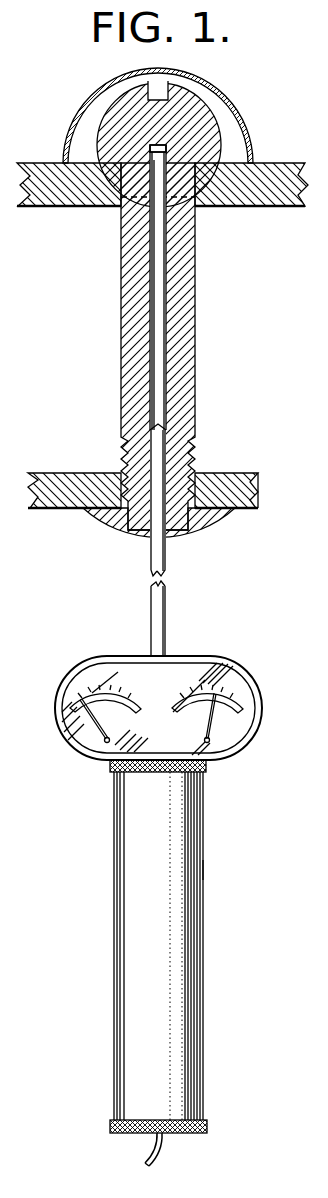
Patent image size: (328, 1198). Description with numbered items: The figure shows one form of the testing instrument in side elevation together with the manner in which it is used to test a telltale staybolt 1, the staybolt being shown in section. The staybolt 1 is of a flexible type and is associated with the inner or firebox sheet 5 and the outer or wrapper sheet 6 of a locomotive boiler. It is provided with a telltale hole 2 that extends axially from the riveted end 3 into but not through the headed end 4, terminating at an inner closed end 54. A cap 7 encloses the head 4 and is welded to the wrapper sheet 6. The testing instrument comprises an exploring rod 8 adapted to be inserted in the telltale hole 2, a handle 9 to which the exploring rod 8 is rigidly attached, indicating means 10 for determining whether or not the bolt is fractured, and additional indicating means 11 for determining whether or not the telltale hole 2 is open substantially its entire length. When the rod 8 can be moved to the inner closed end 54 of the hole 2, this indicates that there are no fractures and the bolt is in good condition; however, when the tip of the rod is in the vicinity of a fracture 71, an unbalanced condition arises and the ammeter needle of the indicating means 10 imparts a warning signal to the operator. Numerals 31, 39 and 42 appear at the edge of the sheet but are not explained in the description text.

The telltale staybolt 1 is at (122, 367).
The telltale hole 2 is at (153, 283).
The riveted end 3 is at (115, 525).
The headed end 4 is at (115, 125).
The inner or firebox sheet 5 is at (53, 483).
The outer or wrapper sheet 6 is at (68, 206).
The cap 7 is at (222, 100).
The exploring rod 8 is at (155, 608).
The handle 9 is at (125, 918).
The indicating means 10 is at (218, 728).
The additional indicating means 11 is at (93, 727).
The plate portion 31 is at (293, 491).
The gauge housing 39 is at (191, 708).
The cylinder portion 42 is at (265, 867).
The inner closed end 54 is at (168, 152).
The fracture 71 is at (174, 446).